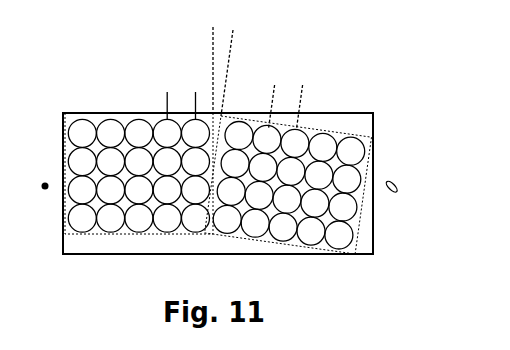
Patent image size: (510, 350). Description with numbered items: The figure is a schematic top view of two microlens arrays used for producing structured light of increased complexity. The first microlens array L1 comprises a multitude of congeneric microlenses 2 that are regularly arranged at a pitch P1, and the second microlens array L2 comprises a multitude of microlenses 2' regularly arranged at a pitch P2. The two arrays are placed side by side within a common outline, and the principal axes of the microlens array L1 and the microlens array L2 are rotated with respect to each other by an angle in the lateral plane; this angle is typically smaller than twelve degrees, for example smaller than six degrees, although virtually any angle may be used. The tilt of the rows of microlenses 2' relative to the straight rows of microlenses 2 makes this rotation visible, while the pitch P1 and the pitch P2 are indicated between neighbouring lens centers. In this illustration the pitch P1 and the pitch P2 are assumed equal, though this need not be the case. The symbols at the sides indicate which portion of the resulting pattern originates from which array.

The microlenses 2 is at (136, 137).
The microlenses 2' is at (318, 186).
The microlens array L1 is at (130, 95).
The microlens array L2 is at (354, 114).
The pitch P1 is at (212, 101).
The pitch P2 is at (322, 105).